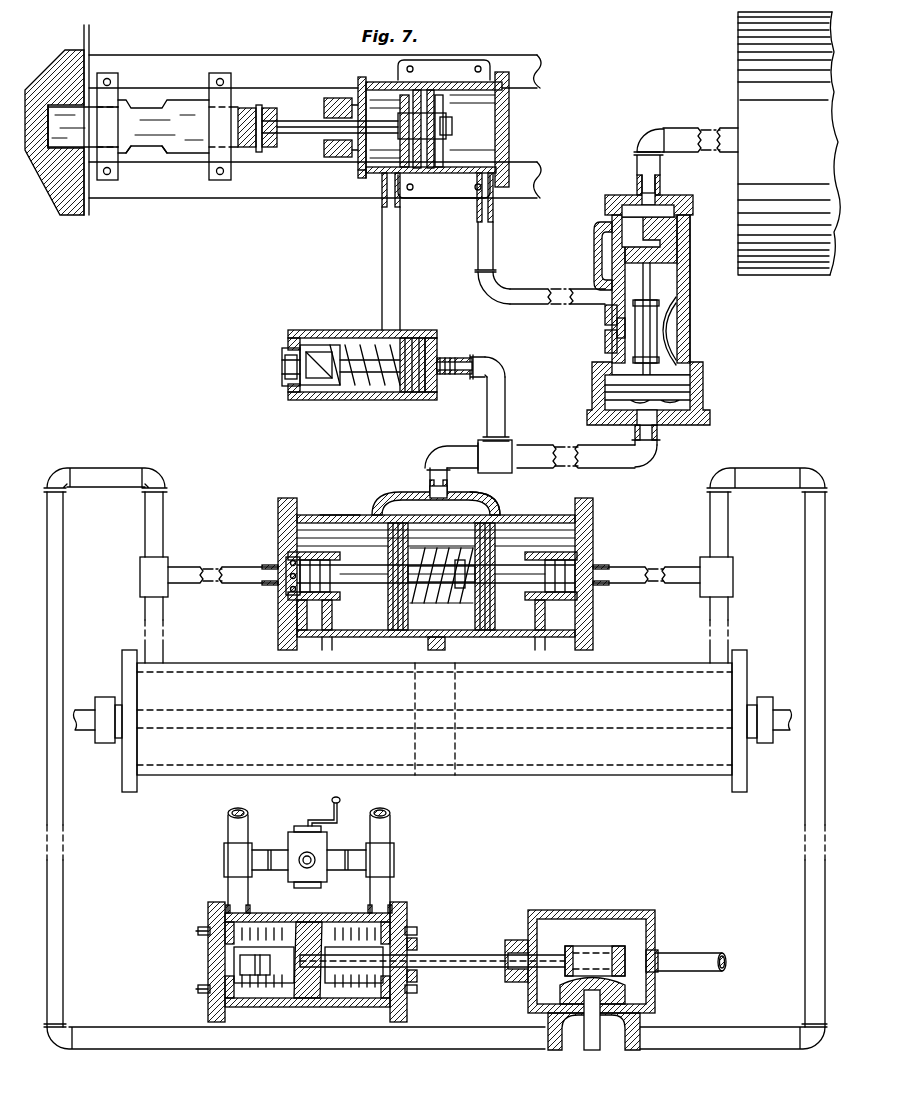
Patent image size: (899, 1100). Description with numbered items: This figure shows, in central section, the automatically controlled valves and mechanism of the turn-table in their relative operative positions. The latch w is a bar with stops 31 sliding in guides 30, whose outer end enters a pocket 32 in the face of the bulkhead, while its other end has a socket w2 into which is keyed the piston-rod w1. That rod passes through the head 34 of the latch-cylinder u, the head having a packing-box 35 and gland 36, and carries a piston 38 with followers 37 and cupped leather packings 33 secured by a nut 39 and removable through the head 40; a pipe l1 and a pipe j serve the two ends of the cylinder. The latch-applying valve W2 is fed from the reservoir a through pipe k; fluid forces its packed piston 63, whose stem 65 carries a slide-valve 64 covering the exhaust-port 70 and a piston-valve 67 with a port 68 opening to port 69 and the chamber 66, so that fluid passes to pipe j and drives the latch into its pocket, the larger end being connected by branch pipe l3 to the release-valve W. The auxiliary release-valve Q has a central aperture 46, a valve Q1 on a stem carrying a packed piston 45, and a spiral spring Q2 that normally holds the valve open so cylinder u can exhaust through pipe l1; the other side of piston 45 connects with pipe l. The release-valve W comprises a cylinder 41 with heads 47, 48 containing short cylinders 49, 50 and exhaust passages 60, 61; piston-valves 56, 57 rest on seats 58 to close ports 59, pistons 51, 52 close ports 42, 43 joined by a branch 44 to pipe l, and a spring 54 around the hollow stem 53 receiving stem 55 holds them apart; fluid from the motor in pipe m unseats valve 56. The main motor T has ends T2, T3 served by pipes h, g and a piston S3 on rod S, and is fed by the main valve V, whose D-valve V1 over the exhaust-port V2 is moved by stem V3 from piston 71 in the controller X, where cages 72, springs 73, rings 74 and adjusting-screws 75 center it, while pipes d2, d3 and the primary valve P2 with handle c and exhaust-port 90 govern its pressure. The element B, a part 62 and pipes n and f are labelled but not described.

The guides 30 is at (118, 78).
The stops 31 is at (128, 155).
The pocket 32 is at (52, 150).
The wall B is at (85, 210).
The latch w is at (143, 126).
The socket w2 is at (257, 148).
The piston-rod w1 is at (327, 132).
The packing-box 35 is at (358, 84).
The nut or gland 36 is at (324, 102).
The followers 37 is at (400, 150).
The piston 38 is at (446, 125).
The nut 39 is at (452, 126).
The cupped leather packings 33 is at (440, 160).
The head 34 is at (358, 172).
The latch-cylinder u is at (434, 129).
The head 40 is at (509, 124).
The pipe j is at (494, 240).
The pipe l1 is at (380, 265).
The pipe k is at (670, 130).
The reservoir a is at (789, 143).
The port 68 is at (650, 230).
The port 69 is at (600, 248).
The packed piston-valve 67 is at (690, 243).
The chamber 66 is at (664, 318).
The latch-applying valve W2 is at (690, 313).
The exhaust-port 70 is at (612, 322).
The slide-valve 64 is at (612, 352).
The packed piston 63 is at (592, 385).
The stem 65 is at (652, 383).
The valve Q1 is at (336, 330).
The central aperture 46 is at (282, 360).
The packed piston 45 is at (445, 357).
The auxiliary release-valve Q is at (350, 398).
The spiral spring Q2 is at (398, 393).
The pipe l is at (505, 408).
The branch pipe l3 is at (612, 466).
The branch 44 is at (450, 487).
The cylinder 41 is at (328, 514).
The port 42 is at (380, 510).
The port 43 is at (500, 508).
The head 47 is at (278, 524).
The head 48 is at (593, 532).
The short cylinder 49 is at (340, 558).
The valve 56 is at (330, 575).
The short cylinder 50 is at (548, 560).
The packed piston 52 is at (495, 565).
The valve 57 is at (575, 575).
The valve-seat 58 is at (286, 590).
The ports 59 is at (297, 618).
The partition 62 is at (332, 614).
The piston 51 is at (390, 600).
The hollow stem 53 is at (441, 585).
The spiral spring 54 is at (447, 600).
The stem 55 is at (462, 590).
The passage 60 is at (327, 638).
The release-valve W is at (445, 645).
The passage 61 is at (546, 650).
The pipe m is at (205, 567).
The pipe n is at (680, 567).
The port-pipe h is at (56, 605).
The port-pipe g is at (696, 648).
The cylinder end T2 is at (145, 721).
The cylinder end T3 is at (722, 721).
The packed piston S3 is at (435, 719).
The cylinder T is at (540, 775).
The piston-rod S is at (88, 735).
The handle c is at (332, 805).
The port-pipe d2 is at (228, 828).
The port-pipe d3 is at (390, 829).
The primary valve P2 is at (292, 841).
The exhaust-port 90 is at (300, 867).
The packed piston 71 is at (308, 920).
The adjusting-screws 75 is at (200, 929).
The cage 72 is at (208, 953).
The main-valve controller X is at (255, 1002).
The spring 73 is at (350, 1002).
The ring 74 is at (408, 997).
The main valve V is at (612, 910).
The sliding D-valve V1 is at (595, 946).
The central exhaust-port V2 is at (592, 1017).
The stem V3 is at (476, 955).
The pipe f is at (706, 973).